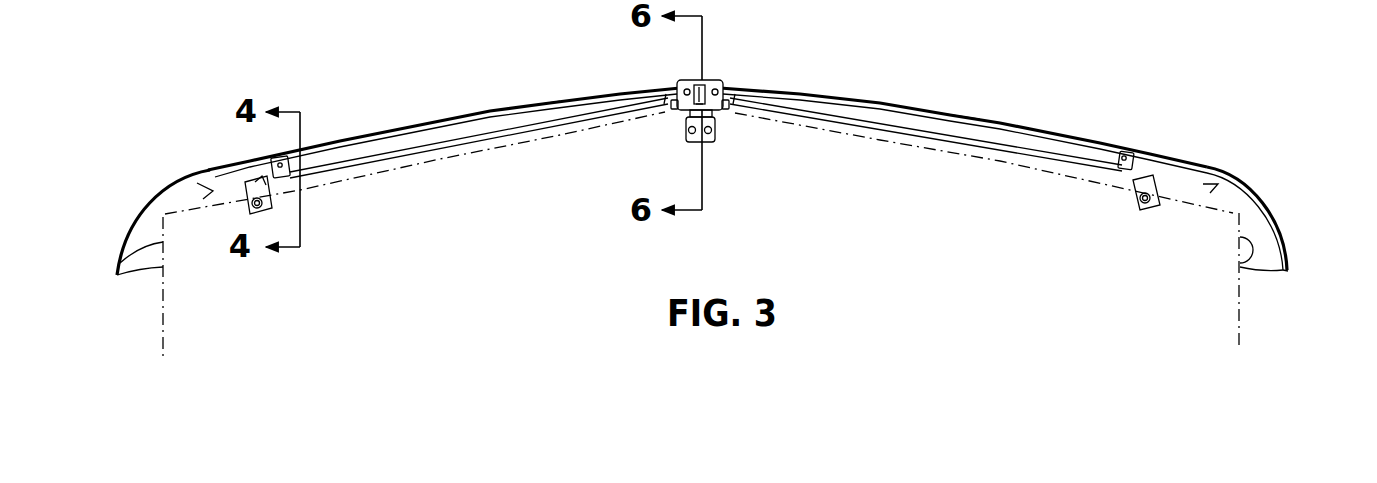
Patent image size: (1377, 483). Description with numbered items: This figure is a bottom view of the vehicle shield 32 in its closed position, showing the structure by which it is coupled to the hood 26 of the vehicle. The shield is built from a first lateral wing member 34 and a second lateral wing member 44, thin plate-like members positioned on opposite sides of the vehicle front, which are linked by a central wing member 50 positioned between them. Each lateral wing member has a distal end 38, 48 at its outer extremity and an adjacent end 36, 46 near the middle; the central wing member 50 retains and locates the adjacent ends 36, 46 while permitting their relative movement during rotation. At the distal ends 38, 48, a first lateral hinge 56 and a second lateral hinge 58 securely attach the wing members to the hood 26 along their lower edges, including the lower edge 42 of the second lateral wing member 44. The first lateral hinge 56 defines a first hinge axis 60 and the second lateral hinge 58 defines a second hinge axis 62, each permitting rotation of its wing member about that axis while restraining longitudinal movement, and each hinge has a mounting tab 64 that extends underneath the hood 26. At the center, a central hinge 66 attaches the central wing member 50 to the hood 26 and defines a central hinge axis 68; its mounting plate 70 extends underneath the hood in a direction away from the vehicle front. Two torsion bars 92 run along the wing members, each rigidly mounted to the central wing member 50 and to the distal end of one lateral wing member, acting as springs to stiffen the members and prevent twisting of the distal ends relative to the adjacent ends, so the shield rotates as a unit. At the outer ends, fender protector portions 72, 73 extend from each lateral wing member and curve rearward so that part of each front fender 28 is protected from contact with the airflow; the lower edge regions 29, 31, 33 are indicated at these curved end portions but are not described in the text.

The hood 26 is at (552, 103).
The front fender 28 is at (157, 203).
The pivot point 29 is at (160, 217).
The end cap 31 is at (182, 212).
The vehicle shield 32 is at (1036, 108).
The end cap lower edge 33 is at (117, 272).
The first lateral wing member 34 is at (414, 121).
The adjacent end of first lateral wing member 36 is at (655, 88).
The distal end of first lateral wing member 38 is at (250, 160).
The lower edge of second lateral wing member 42 is at (1127, 152).
The second lateral wing member 44 is at (853, 92).
The adjacent end of second lateral wing member 46 is at (724, 87).
The distal end of second lateral wing member 48 is at (1205, 170).
The central wing member 50 is at (679, 80).
The first lateral hinge 56 is at (241, 207).
The second lateral hinge 58 is at (1128, 188).
The first hinge axis 60 is at (190, 176).
The second hinge axis 62 is at (1237, 177).
The mounting tab 64 is at (270, 210).
The central hinge 66 is at (682, 128).
The central hinge axis 68 is at (768, 117).
The mounting plate 70 is at (711, 142).
The fender protector portion 72 is at (121, 243).
The fender protector portion 73 is at (1288, 250).
The torsion bar 92 is at (500, 140).